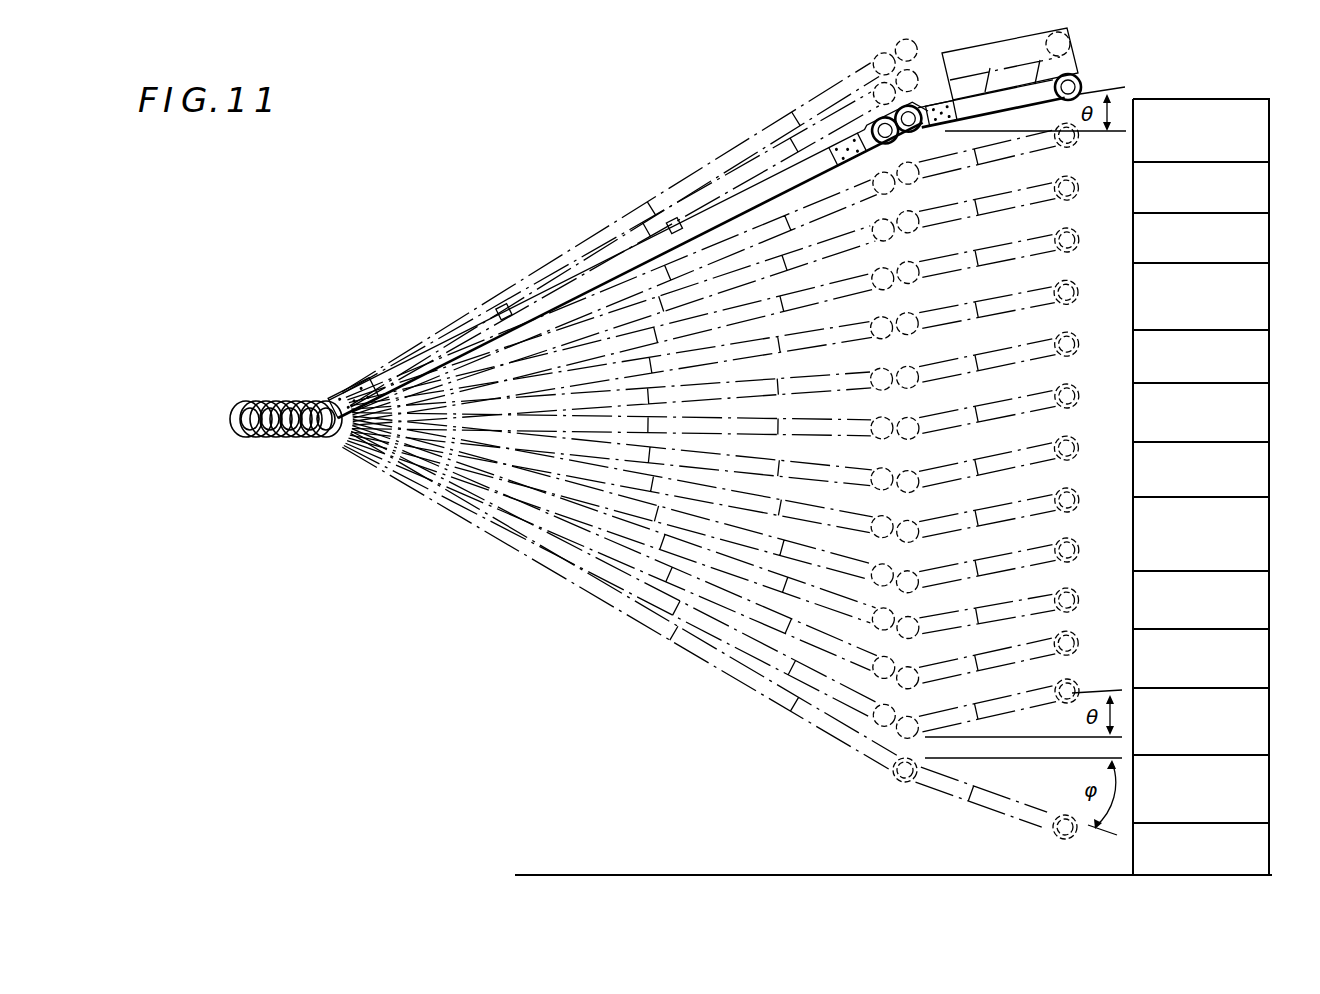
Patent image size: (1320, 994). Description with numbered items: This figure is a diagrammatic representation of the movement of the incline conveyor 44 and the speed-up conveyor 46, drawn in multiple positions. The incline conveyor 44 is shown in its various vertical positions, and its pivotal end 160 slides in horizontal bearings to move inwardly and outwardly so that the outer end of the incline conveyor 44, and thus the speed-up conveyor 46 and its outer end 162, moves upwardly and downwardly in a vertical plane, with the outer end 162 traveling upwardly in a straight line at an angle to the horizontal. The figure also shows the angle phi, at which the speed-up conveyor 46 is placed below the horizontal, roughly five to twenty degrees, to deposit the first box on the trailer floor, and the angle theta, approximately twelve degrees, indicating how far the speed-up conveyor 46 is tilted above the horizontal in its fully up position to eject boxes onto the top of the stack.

The incline conveyor 44 is at (629, 432).
The speed-up conveyor 46 is at (965, 424).
The pivotal end 160 is at (277, 394).
The outer end 162 is at (1080, 459).